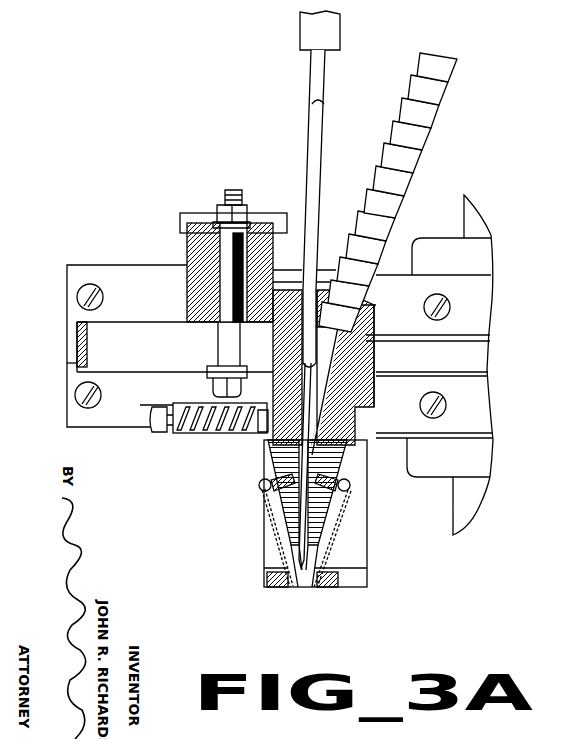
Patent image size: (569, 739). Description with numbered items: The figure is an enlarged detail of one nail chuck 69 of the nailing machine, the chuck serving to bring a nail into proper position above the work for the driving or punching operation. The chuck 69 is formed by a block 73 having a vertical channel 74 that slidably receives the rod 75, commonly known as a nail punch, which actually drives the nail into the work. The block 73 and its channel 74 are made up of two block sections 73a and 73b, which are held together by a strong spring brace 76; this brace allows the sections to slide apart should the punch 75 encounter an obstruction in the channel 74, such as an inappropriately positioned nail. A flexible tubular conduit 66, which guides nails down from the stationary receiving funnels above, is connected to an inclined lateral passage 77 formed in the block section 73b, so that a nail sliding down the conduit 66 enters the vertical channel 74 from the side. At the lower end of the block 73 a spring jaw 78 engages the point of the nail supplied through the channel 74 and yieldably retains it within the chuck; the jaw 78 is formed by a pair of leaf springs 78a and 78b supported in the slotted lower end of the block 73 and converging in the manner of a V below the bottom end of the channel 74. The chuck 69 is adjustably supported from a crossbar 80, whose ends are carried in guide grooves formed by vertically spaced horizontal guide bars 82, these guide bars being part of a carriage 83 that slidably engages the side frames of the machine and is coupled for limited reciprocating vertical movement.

The flexible tubular conduit 66 is at (431, 108).
The nail chuck 69 is at (270, 535).
The block 73 is at (285, 360).
The block section 73a is at (282, 460).
The block section 73b is at (362, 348).
The vertical channel 74 is at (310, 450).
The rod 75 is at (316, 117).
The spring brace 76 is at (200, 407).
The inclined lateral passage 77 is at (327, 370).
The spring jaw 78 is at (287, 555).
The leaf spring 78a is at (291, 587).
The leaf spring 78b is at (310, 587).
The crossbar 80 is at (197, 255).
The guide bar 82 is at (477, 393).
The carriage 83 is at (487, 437).